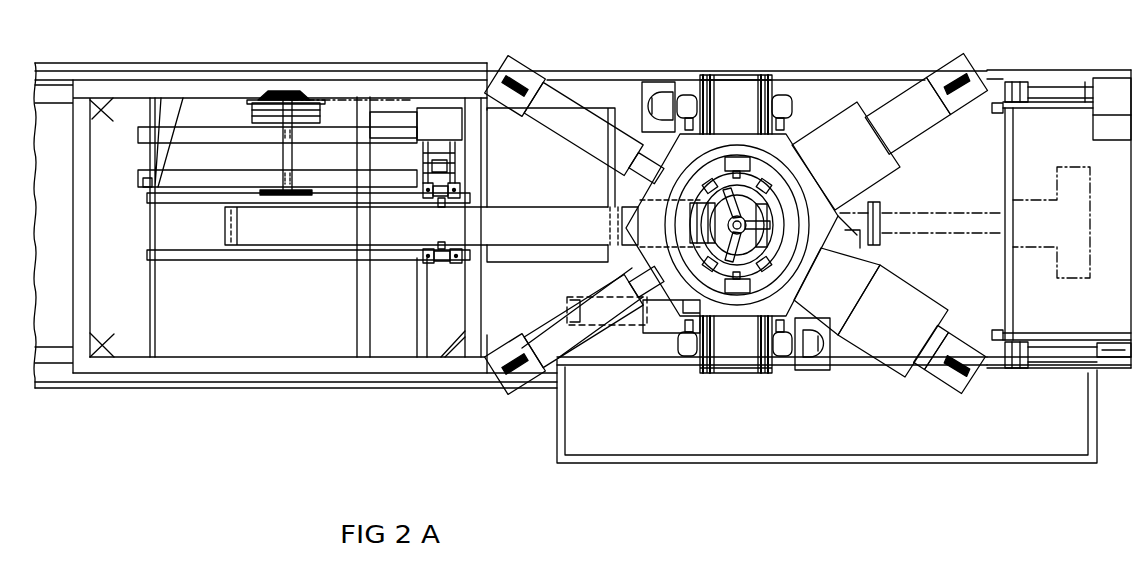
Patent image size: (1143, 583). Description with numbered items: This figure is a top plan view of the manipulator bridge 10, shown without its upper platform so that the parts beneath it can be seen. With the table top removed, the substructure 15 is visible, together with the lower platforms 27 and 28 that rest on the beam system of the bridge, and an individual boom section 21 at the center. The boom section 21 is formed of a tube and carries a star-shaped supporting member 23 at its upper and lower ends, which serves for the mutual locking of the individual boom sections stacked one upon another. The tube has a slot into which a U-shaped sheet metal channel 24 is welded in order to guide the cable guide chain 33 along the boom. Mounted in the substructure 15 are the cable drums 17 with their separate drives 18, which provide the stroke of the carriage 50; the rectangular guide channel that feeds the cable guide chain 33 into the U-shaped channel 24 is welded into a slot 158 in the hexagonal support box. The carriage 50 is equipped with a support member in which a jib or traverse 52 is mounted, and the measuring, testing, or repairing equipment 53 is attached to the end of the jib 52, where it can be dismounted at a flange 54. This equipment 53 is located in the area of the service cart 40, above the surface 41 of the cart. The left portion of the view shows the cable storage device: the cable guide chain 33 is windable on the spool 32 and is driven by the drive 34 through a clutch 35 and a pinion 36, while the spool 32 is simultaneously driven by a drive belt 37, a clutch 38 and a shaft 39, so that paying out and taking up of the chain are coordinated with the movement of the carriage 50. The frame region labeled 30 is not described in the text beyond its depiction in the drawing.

The manipulator bridge 10 is at (614, 80).
The substructure 15 is at (918, 105).
The cable drums 17 is at (736, 88).
The drives 18 is at (664, 100).
The boom section 21 is at (780, 183).
The star-shaped supporting member 23 is at (770, 210).
The U-shaped sheet metal channel 24 is at (684, 221).
The lower platform 27 is at (592, 96).
The lower platform 28 is at (616, 440).
The frame 30 is at (228, 96).
The spool 32 is at (190, 257).
The cable guide chain 33 is at (295, 230).
The drive 34 is at (398, 116).
The clutch 35 is at (458, 162).
The pinion 36 is at (458, 197).
The drive belt 37 is at (388, 100).
The clutch 38 is at (303, 96).
The shaft 39 is at (282, 156).
The service cart 40 is at (1113, 95).
The surface 41 is at (1085, 305).
The carriage 50 is at (662, 322).
The jib or traverse 52 is at (874, 214).
The measuring, testing, or repairing equipment 53 is at (1086, 183).
The flange 54 is at (876, 236).
The slot 158 is at (628, 262).